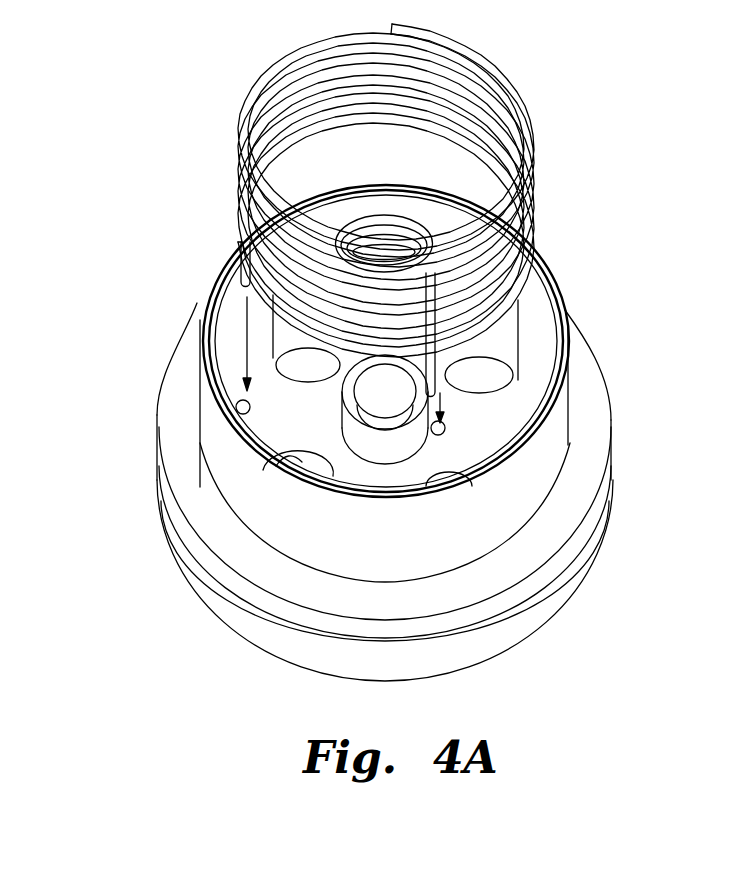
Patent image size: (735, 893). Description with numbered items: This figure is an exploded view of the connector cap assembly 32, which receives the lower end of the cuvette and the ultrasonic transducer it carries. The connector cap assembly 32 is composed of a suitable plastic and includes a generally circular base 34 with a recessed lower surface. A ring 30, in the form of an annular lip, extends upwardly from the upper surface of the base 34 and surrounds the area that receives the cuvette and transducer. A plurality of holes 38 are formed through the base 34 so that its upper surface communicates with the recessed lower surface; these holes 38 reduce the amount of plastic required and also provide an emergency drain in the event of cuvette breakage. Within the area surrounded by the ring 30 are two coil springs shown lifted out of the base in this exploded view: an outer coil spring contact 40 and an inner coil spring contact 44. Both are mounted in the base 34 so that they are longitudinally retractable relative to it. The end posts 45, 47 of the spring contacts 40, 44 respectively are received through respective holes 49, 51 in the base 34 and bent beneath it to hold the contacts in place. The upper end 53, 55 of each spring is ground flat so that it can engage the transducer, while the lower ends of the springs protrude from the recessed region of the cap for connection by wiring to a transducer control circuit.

The ring 30 is at (553, 437).
The connector cap assembly 32 is at (586, 559).
The base 34 is at (259, 632).
The holes 38 is at (265, 446).
The outer coil spring contact 40 is at (246, 108).
The inner coil spring contact 44 is at (410, 216).
The end post 45 is at (442, 388).
The end post 47 is at (242, 264).
The hole 49 is at (444, 432).
The hole 51 is at (251, 407).
The upper end 53 is at (362, 215).
The upper end 55 is at (462, 54).